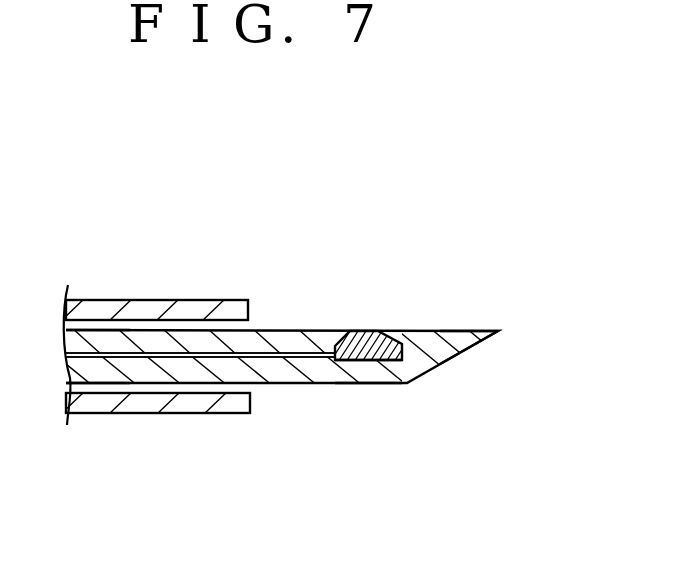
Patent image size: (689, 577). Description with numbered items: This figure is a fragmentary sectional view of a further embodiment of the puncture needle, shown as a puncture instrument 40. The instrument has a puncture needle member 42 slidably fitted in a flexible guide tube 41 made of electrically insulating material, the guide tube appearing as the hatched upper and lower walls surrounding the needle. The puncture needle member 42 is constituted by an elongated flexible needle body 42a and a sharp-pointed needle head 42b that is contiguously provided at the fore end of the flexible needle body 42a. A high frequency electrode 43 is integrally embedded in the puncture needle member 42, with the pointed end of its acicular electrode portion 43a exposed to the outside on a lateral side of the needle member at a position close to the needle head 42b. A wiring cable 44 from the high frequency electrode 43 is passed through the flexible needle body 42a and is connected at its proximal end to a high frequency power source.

The puncture instrument 40 is at (167, 288).
The flexible guide tube 41 is at (162, 408).
The puncture needle member 42 is at (288, 312).
The flexible needle body 42a is at (98, 334).
The needle head 42b is at (482, 338).
The high frequency electrode 43 is at (377, 361).
The acicular electrode portion 43a is at (369, 324).
The wiring cable 44 is at (284, 356).